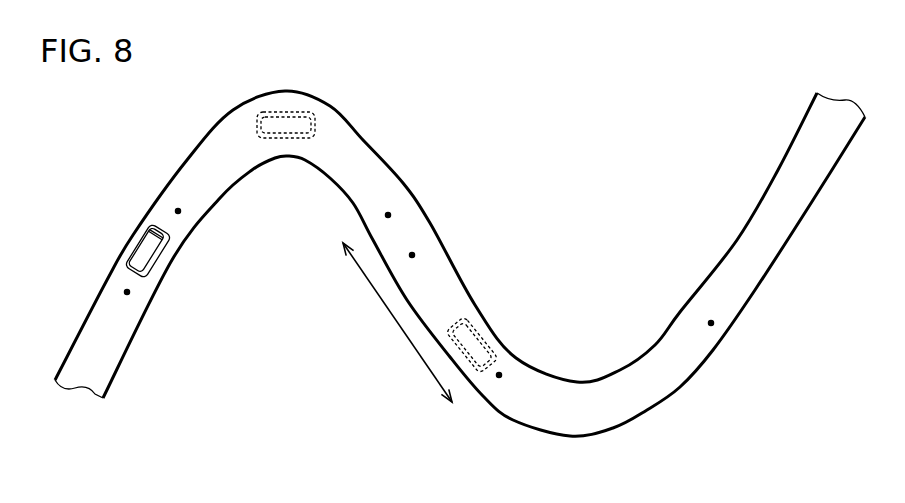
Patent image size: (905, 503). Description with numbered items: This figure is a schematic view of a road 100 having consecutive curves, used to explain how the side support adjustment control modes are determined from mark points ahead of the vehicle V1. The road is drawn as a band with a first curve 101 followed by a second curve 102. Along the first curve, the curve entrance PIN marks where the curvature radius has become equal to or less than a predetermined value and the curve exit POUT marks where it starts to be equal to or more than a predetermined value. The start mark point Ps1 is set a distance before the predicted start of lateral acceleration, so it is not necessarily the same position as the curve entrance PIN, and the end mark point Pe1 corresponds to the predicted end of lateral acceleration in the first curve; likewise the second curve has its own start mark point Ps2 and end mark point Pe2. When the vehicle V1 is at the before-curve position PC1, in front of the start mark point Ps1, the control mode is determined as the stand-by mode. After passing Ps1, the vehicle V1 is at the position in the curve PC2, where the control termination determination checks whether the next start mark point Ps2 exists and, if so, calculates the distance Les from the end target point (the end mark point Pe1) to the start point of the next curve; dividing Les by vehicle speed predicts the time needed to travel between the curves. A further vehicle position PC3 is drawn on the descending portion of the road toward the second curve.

The elongated flexible member 100 is at (460, 272).
The first curve 101 is at (232, 110).
The second (lower) surface 102 is at (583, 437).
The before-curve position PC1 is at (140, 243).
The position in the curve PC2 is at (295, 139).
The third pressure chamber PC3 is at (500, 339).
The vehicle V1 is at (157, 263).
The start mark point Ps1 is at (178, 211).
The next start mark point Ps2 is at (499, 375).
The end mark point Pe1 is at (388, 215).
The end mark point Pe2 is at (711, 323).
The curve entrance PIN is at (127, 292).
The curve exit POUT is at (412, 255).
The distance between end target point and next start point Les is at (373, 298).